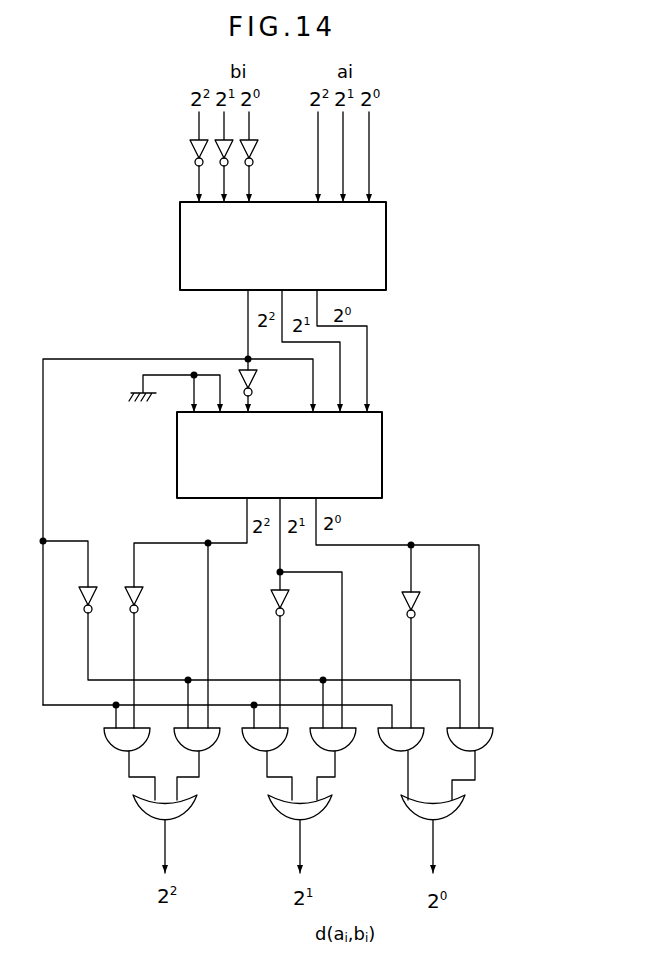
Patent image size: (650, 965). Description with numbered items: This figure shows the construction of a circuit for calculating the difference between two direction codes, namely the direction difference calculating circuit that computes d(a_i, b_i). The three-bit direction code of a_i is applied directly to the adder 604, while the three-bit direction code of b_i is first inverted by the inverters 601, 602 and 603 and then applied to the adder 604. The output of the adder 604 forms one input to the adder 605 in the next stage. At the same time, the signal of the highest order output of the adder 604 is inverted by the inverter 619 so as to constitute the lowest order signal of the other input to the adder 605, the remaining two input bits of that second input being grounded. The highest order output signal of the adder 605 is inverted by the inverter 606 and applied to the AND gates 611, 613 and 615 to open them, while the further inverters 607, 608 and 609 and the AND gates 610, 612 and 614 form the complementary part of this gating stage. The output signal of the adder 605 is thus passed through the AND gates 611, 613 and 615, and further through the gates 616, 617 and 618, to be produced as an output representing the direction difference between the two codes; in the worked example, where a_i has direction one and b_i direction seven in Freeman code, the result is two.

The inverter 601 is at (194, 151).
The inverter 602 is at (230, 145).
The inverter 603 is at (256, 151).
The adder 604 is at (386, 232).
The adder 605 is at (382, 440).
The inverter 606 is at (97, 596).
The inverter 607 is at (143, 596).
The inverter 608 is at (289, 600).
The inverter 609 is at (420, 603).
The AND gate 610 is at (124, 749).
The AND gate 611 is at (189, 749).
The AND gate 612 is at (266, 749).
The AND gate 613 is at (332, 750).
The AND gate 614 is at (400, 751).
The AND gate 615 is at (472, 751).
The AND gate 616 is at (160, 818).
The AND gate 617 is at (294, 818).
The AND gate 618 is at (427, 821).
The inverter 619 is at (253, 382).